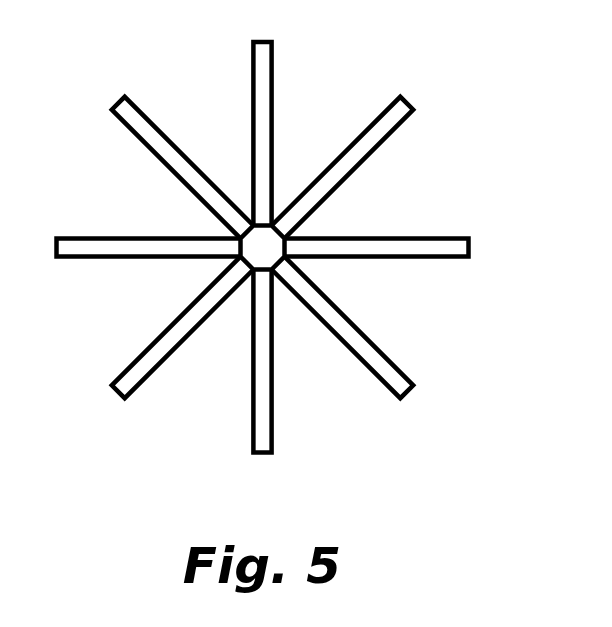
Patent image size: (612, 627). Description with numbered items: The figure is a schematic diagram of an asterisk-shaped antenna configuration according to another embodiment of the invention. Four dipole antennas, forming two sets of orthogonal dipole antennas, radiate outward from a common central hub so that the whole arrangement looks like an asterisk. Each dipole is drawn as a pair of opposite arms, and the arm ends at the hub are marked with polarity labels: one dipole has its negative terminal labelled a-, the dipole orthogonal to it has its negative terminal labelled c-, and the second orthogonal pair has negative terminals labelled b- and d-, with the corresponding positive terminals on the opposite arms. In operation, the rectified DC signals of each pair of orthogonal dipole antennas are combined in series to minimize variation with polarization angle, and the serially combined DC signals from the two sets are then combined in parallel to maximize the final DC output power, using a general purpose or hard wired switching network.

The phase a negative winding arm a- is at (377, 247).
The phase b negative winding arm b- is at (343, 328).
The phase c negative winding arm c- is at (262, 361).
The phase d negative winding arm d- is at (183, 328).